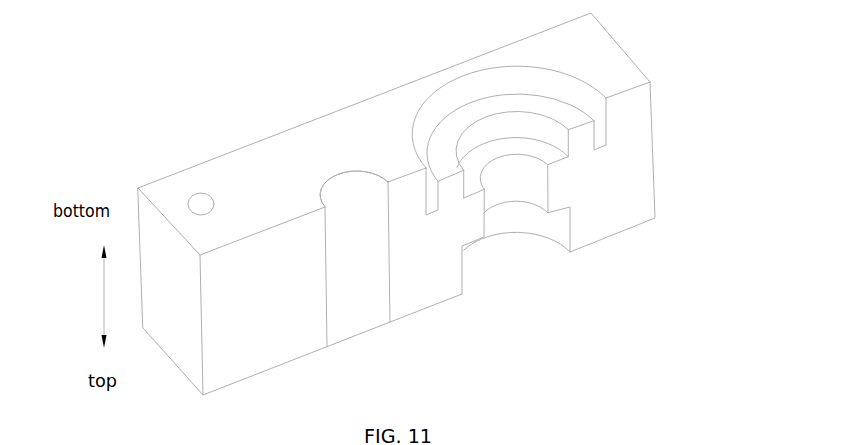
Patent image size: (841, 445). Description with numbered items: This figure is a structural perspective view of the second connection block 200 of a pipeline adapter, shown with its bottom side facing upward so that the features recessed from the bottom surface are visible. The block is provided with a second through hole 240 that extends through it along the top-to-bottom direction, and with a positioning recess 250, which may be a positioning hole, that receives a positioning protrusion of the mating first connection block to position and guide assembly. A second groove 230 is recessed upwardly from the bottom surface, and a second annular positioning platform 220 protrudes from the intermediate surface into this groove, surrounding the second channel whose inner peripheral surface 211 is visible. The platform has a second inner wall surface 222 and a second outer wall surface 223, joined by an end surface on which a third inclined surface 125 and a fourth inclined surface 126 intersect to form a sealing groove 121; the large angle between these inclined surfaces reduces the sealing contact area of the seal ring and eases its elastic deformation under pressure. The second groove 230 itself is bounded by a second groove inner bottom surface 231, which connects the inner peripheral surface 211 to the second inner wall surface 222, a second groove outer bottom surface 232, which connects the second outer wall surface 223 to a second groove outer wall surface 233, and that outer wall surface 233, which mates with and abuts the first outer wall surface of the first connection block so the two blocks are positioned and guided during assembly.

The second connection block 200 is at (360, 48).
The positioning recess 250 is at (202, 203).
The second through hole 240 is at (355, 215).
The second outer wall surface 223 is at (345, 200).
The third inclined surface 125 is at (433, 183).
The sealing groove 121 is at (440, 160).
The second groove outer wall surface 233 is at (568, 92).
The second inner wall surface 222 is at (540, 133).
The second annular positioning platform 220 is at (577, 140).
The second groove 230 is at (597, 128).
The second groove outer bottom surface 232 is at (601, 147).
The second groove inner bottom surface 231 is at (548, 160).
The inner peripheral surface 211 is at (510, 178).
The fourth inclined surface 126 is at (467, 250).